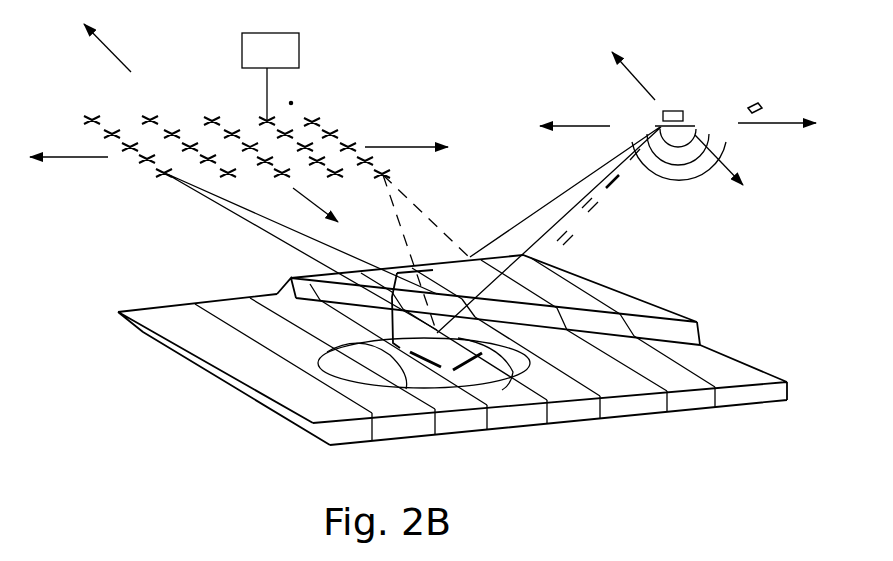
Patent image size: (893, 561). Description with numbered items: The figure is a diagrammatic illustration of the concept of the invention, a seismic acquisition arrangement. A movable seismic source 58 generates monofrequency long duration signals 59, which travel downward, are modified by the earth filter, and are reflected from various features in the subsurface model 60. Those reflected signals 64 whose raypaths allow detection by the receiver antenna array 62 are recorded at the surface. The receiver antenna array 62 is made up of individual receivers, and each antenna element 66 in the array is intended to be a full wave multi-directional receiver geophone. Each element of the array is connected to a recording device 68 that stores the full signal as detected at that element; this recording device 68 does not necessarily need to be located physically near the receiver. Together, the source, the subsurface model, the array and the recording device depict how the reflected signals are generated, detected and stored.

The movable seismic source 58 is at (683, 110).
The monofrequency long duration signals 59 is at (583, 216).
The subsurface model 60 is at (549, 287).
The receiver antenna array 62 is at (182, 117).
The reflected signals 64 is at (262, 238).
The antenna element 66 is at (264, 120).
The recording device 68 is at (299, 55).